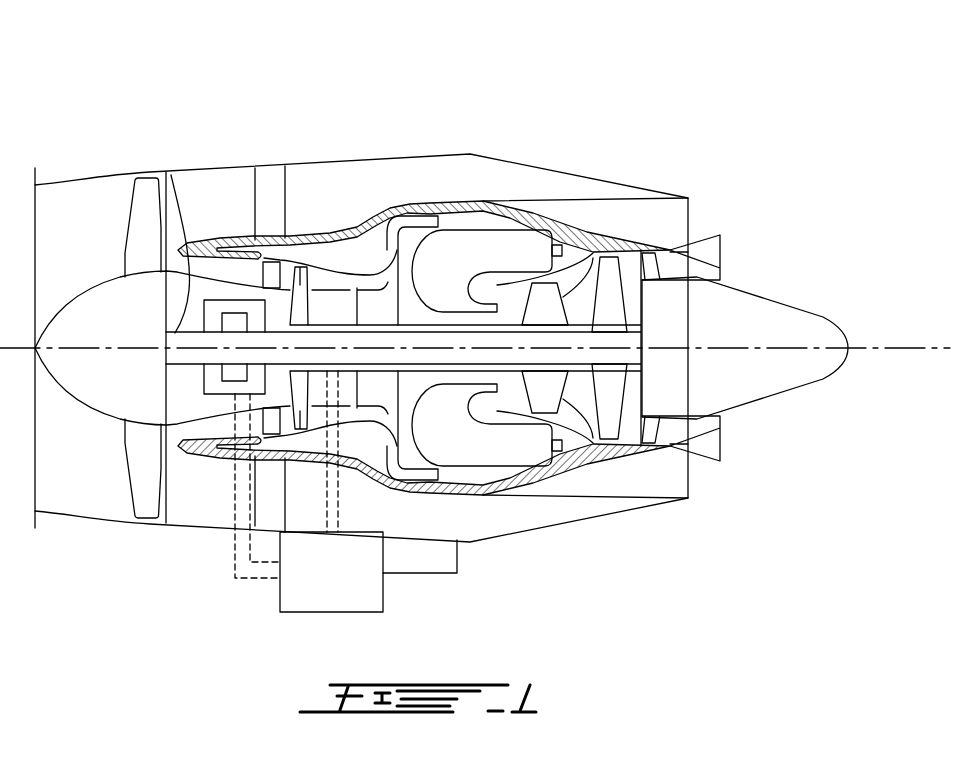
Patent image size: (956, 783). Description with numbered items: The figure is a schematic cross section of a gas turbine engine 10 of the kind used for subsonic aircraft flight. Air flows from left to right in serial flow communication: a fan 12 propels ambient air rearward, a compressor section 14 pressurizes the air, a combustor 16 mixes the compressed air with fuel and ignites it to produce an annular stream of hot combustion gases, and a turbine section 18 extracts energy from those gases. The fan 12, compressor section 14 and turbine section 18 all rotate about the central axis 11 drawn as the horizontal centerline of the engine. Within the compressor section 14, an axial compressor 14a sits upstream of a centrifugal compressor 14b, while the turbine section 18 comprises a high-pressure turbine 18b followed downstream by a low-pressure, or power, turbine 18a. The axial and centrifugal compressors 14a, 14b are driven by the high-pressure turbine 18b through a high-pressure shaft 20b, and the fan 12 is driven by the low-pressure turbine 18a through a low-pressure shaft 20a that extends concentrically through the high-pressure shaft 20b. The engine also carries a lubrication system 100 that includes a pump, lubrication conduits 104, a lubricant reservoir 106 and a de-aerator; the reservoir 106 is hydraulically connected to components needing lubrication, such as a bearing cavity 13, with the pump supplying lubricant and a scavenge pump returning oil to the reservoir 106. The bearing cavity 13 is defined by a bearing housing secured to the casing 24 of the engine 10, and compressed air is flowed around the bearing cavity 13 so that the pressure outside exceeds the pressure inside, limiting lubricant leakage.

The gas turbine engine 10 is at (600, 126).
The central axis 11 is at (875, 348).
The fan 12 is at (142, 459).
The bearing cavity 13 is at (215, 390).
The compressor section 14 is at (328, 285).
The axial compressor 14a is at (300, 267).
The centrifugal compressor 14b is at (382, 294).
The combustor 16 is at (483, 246).
The turbine section 18 is at (578, 395).
The low-pressure turbine 18a is at (609, 275).
The high-pressure turbine 18b is at (545, 300).
The low-pressure shaft 20a is at (171, 175).
The high-pressure shaft 20b is at (412, 495).
The casing 24 is at (343, 290).
The lubrication system 100 is at (253, 588).
The lubrication conduits 104 is at (230, 543).
The lubricant reservoir 106 is at (331, 572).